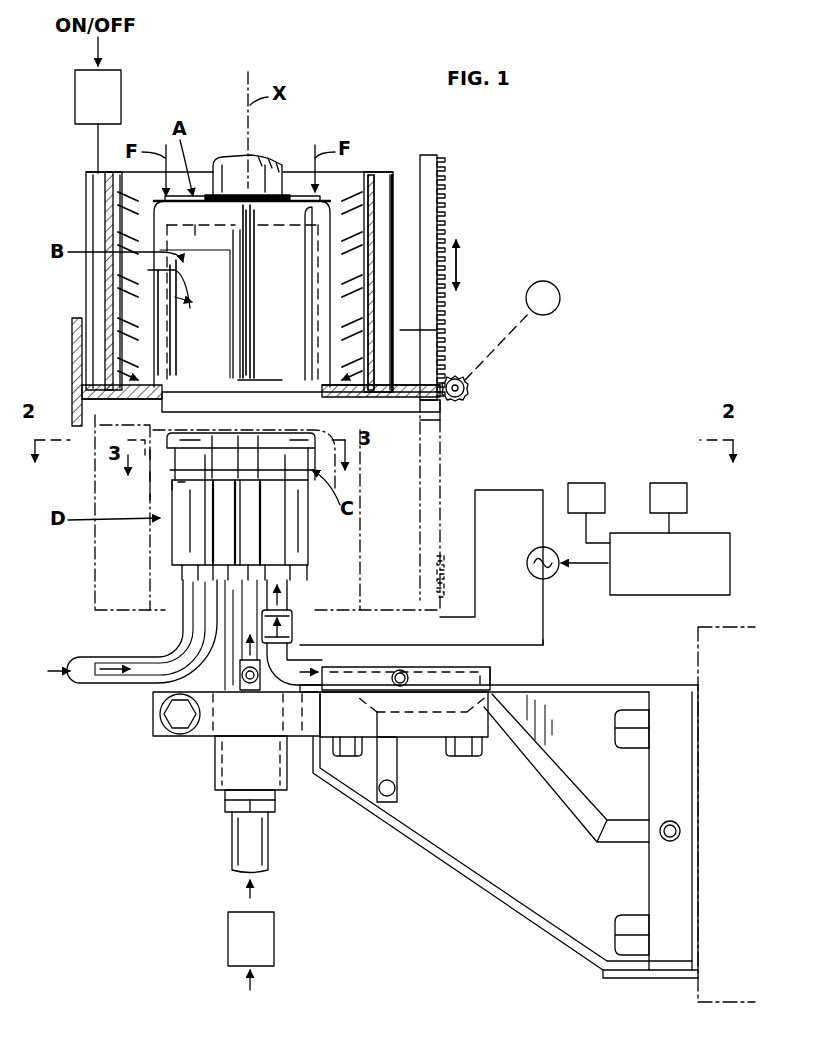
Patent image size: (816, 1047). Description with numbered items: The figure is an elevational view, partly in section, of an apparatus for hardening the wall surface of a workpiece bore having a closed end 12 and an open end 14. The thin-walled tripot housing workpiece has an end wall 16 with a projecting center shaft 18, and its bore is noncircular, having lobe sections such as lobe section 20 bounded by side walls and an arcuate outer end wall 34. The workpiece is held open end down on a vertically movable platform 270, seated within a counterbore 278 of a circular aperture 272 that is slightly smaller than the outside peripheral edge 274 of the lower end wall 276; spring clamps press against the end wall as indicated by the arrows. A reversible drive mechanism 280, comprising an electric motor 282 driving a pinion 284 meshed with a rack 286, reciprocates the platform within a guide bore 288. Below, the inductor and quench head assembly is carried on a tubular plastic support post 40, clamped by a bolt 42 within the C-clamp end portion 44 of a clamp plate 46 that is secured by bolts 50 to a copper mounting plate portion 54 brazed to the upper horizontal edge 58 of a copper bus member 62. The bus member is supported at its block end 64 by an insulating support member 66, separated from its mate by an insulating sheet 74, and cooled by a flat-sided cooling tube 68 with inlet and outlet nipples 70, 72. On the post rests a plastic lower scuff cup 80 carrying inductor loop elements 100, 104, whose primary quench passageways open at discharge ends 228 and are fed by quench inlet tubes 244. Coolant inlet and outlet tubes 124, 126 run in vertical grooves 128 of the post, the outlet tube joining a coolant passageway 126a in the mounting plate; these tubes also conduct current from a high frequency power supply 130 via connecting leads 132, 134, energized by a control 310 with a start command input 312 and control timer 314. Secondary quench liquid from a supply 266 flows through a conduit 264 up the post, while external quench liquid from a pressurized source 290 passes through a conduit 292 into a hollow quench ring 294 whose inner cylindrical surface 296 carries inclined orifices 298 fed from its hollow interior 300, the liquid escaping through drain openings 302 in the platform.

The closed end 12 is at (200, 228).
The open end 14 is at (213, 405).
The end wall 16 is at (297, 199).
The center shaft 18 is at (230, 165).
The lobe section 20 is at (148, 270).
The outer end wall 34 is at (172, 320).
The support post 40 is at (218, 770).
The bolt 42 is at (163, 716).
The C-clamp end portion 44 is at (205, 730).
The clamp plate 46 is at (412, 742).
The bolts 50 is at (348, 757).
The mounting plate portion 54 is at (490, 676).
The upper horizontal edge 58 is at (585, 692).
The bus member 62 is at (498, 893).
The block end 64 is at (680, 750).
The insulating support member 66 is at (695, 632).
The cooling tube 68 is at (570, 805).
The inlet nipple 70 is at (680, 840).
The outlet nipple 72 is at (385, 800).
The insulating sheet 74 is at (620, 685).
The lower scuff cup 80 is at (175, 548).
The inductor loop element 100 is at (162, 405).
The inductor loop element 104 is at (283, 470).
The inlet tube 124 is at (294, 632).
The outlet tube 126 is at (212, 665).
The coolant passageway 126a is at (390, 670).
The vertical grooves 128 is at (292, 636).
The power supply 130 is at (530, 556).
The connecting lead 132 is at (495, 490).
The connecting lead 134 is at (543, 645).
The discharge ends 228 is at (172, 498).
The quench inlet tubes 244 is at (288, 600).
The conduit 264 is at (232, 838).
The secondary quench supply 266 is at (228, 935).
The platform 270 is at (425, 400).
The aperture 272 is at (305, 392).
The outside peripheral edge 274 is at (245, 400).
The lower end wall 276 is at (252, 378).
The counterbore 278 is at (232, 378).
The drive mechanism 280 is at (500, 330).
The electric motor 282 is at (555, 283).
The pinion 284 is at (468, 392).
The rack 286 is at (435, 190).
The guide bore 288 is at (95, 455).
The pressurized source 290 is at (122, 86).
The conduit 292 is at (97, 137).
The quench ring 294 is at (86, 216).
The inner cylindrical surface 296 is at (438, 333).
The orifices 298 is at (365, 258).
The hollow interior 300 is at (397, 193).
The drain openings 302 is at (82, 370).
The control 310 is at (700, 533).
The start command input 312 is at (669, 483).
The control timer 314 is at (586, 483).